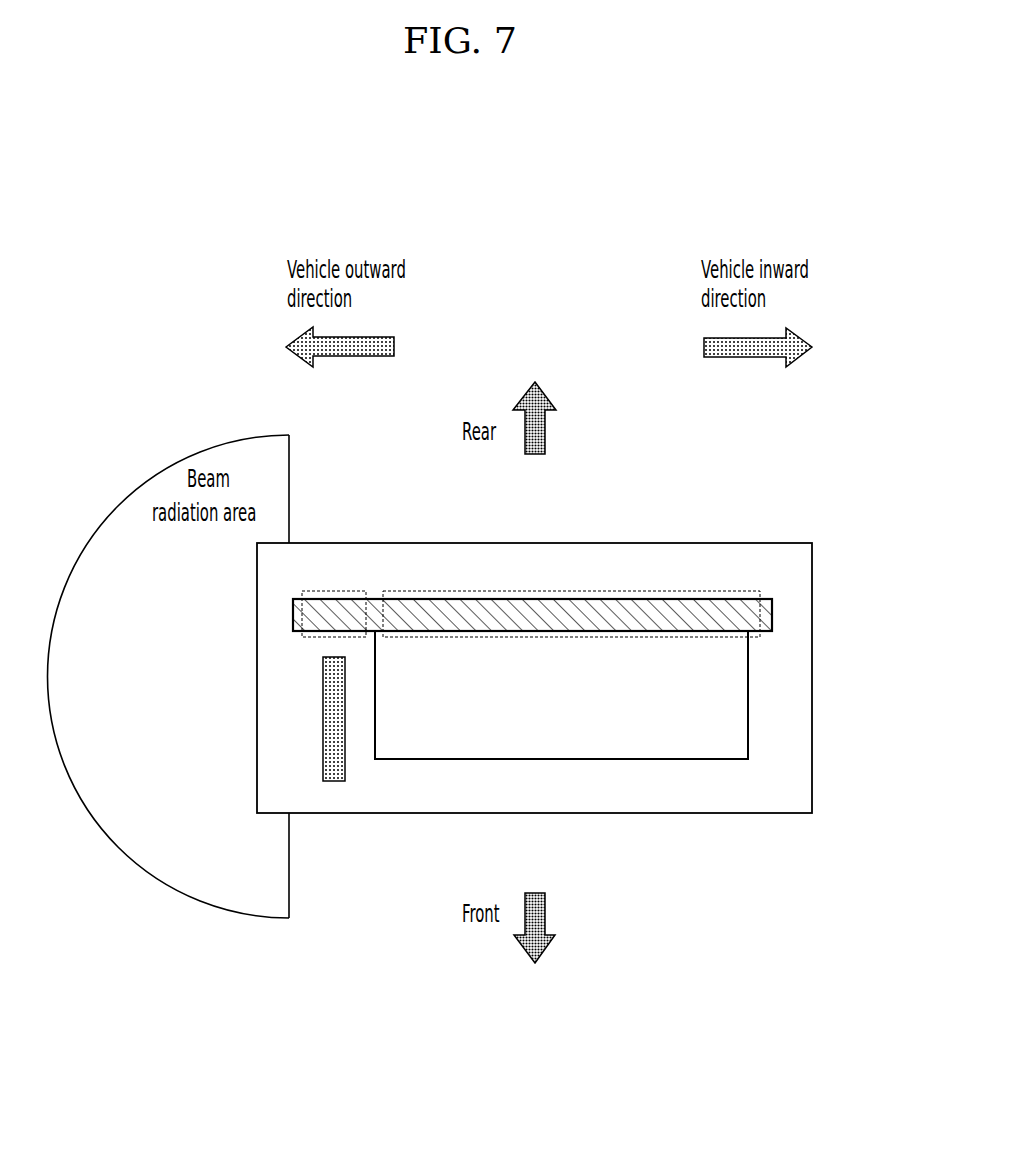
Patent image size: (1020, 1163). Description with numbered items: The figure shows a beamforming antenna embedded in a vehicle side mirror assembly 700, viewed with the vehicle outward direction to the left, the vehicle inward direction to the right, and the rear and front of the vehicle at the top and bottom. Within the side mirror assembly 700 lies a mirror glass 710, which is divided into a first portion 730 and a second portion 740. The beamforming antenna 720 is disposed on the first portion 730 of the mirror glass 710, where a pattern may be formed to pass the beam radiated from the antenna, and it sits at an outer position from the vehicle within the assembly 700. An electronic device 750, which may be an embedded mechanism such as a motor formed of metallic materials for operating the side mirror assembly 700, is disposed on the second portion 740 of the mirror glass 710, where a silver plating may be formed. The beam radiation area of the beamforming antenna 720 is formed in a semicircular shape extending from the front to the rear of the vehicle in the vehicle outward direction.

The vehicle side mirror assembly 700 is at (762, 543).
The mirror glass 710 is at (772, 614).
The beamforming antenna 720 is at (337, 782).
The first portion 730 is at (334, 590).
The second portion 740 is at (437, 590).
The electronic device 750 is at (748, 690).